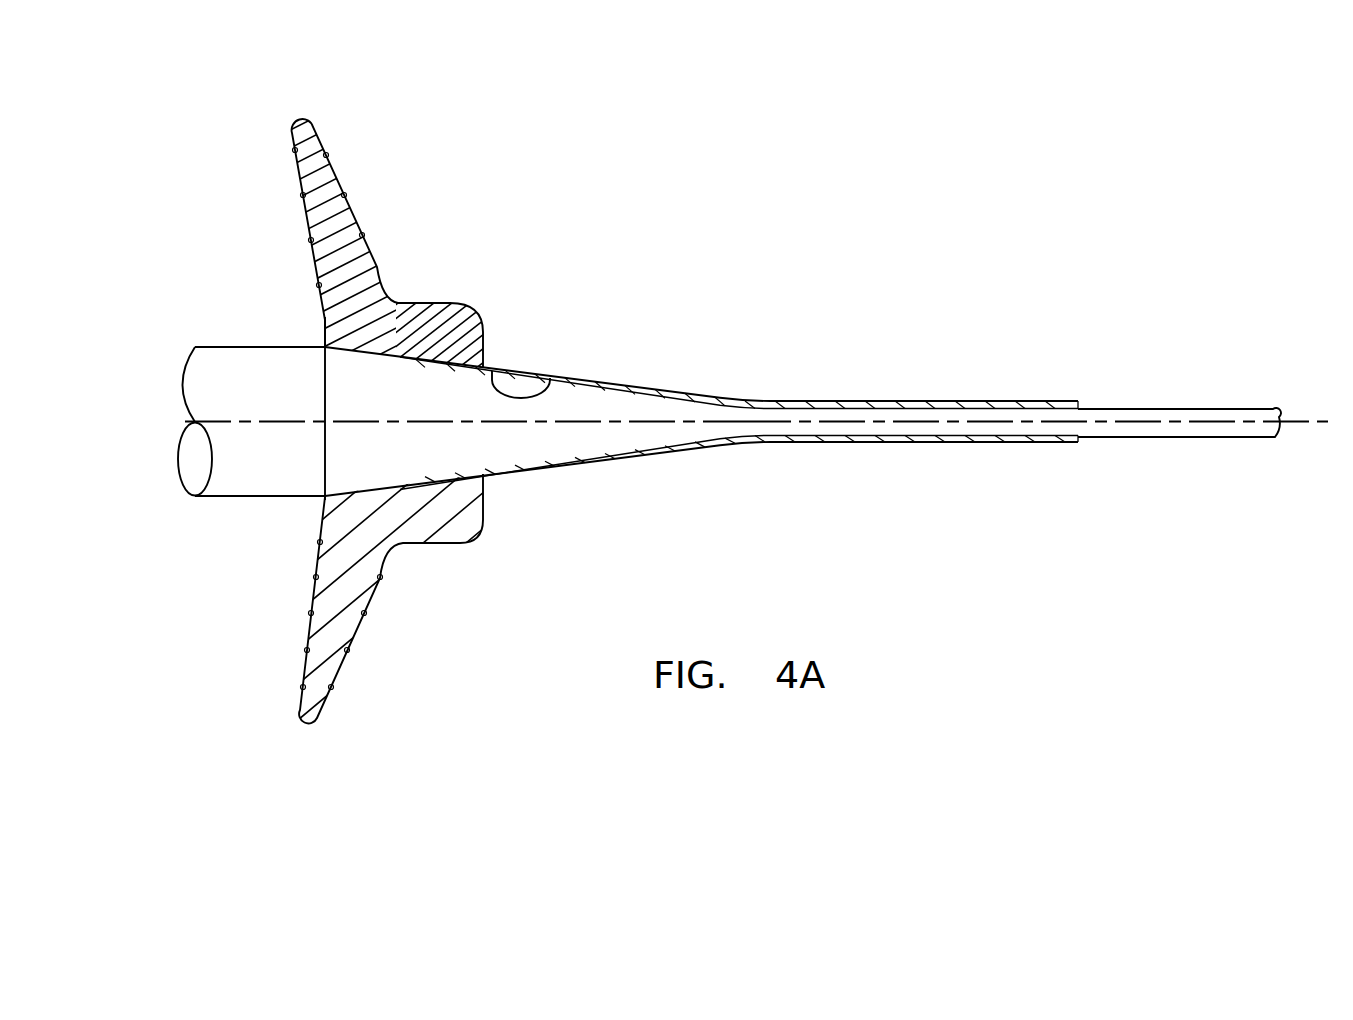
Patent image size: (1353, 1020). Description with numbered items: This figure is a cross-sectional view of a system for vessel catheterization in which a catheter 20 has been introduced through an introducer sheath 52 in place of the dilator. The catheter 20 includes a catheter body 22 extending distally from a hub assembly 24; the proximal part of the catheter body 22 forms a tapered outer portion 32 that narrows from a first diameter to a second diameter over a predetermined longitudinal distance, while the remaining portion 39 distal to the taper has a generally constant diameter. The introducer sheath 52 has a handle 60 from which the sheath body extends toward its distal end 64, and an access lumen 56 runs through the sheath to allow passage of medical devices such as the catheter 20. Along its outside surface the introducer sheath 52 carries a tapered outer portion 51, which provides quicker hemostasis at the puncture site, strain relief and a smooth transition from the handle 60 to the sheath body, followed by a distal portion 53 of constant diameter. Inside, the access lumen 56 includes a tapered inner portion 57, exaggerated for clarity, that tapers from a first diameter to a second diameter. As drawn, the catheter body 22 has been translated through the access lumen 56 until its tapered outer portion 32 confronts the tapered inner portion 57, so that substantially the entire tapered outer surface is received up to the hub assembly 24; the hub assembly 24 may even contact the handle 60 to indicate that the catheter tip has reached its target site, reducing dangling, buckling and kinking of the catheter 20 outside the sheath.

The catheter 20 is at (270, 474).
The catheter body 22 is at (528, 435).
The hub assembly 24 is at (256, 362).
The tapered outer portion 32 is at (628, 410).
The remaining portion 39 is at (865, 423).
The tapered outer portion 51 is at (602, 365).
The introducer sheath 52 is at (808, 352).
The distal portion 53 is at (966, 448).
The access lumen 56 is at (648, 454).
The tapered inner portion 57 is at (549, 382).
The handle 60 is at (387, 310).
The distal end 64 is at (1078, 407).